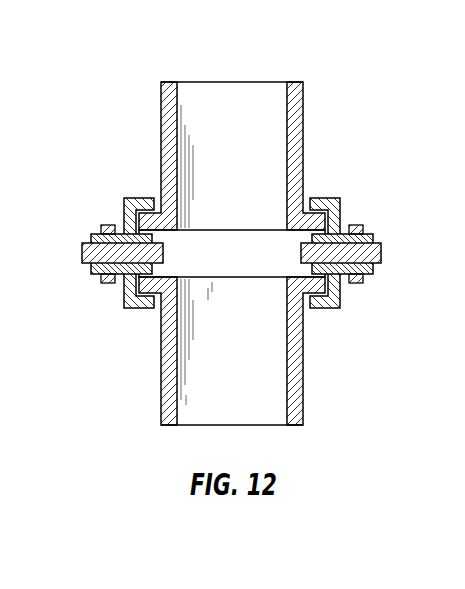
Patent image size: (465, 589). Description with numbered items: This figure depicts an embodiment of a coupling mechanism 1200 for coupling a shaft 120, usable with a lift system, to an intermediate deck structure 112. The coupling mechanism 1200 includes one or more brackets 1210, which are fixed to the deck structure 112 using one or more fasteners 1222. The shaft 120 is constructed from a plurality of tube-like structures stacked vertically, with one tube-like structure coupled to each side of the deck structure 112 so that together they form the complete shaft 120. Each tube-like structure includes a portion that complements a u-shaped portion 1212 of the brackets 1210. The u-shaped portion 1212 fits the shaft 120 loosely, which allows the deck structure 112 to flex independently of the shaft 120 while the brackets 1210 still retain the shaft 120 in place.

The coupling mechanism 1200 is at (116, 48).
The shaft 120 is at (161, 153).
The bracket 1210 is at (143, 199).
The u-shaped portion 1212 is at (152, 221).
The fastener 1222 is at (110, 225).
The deck structure 112 is at (233, 254).